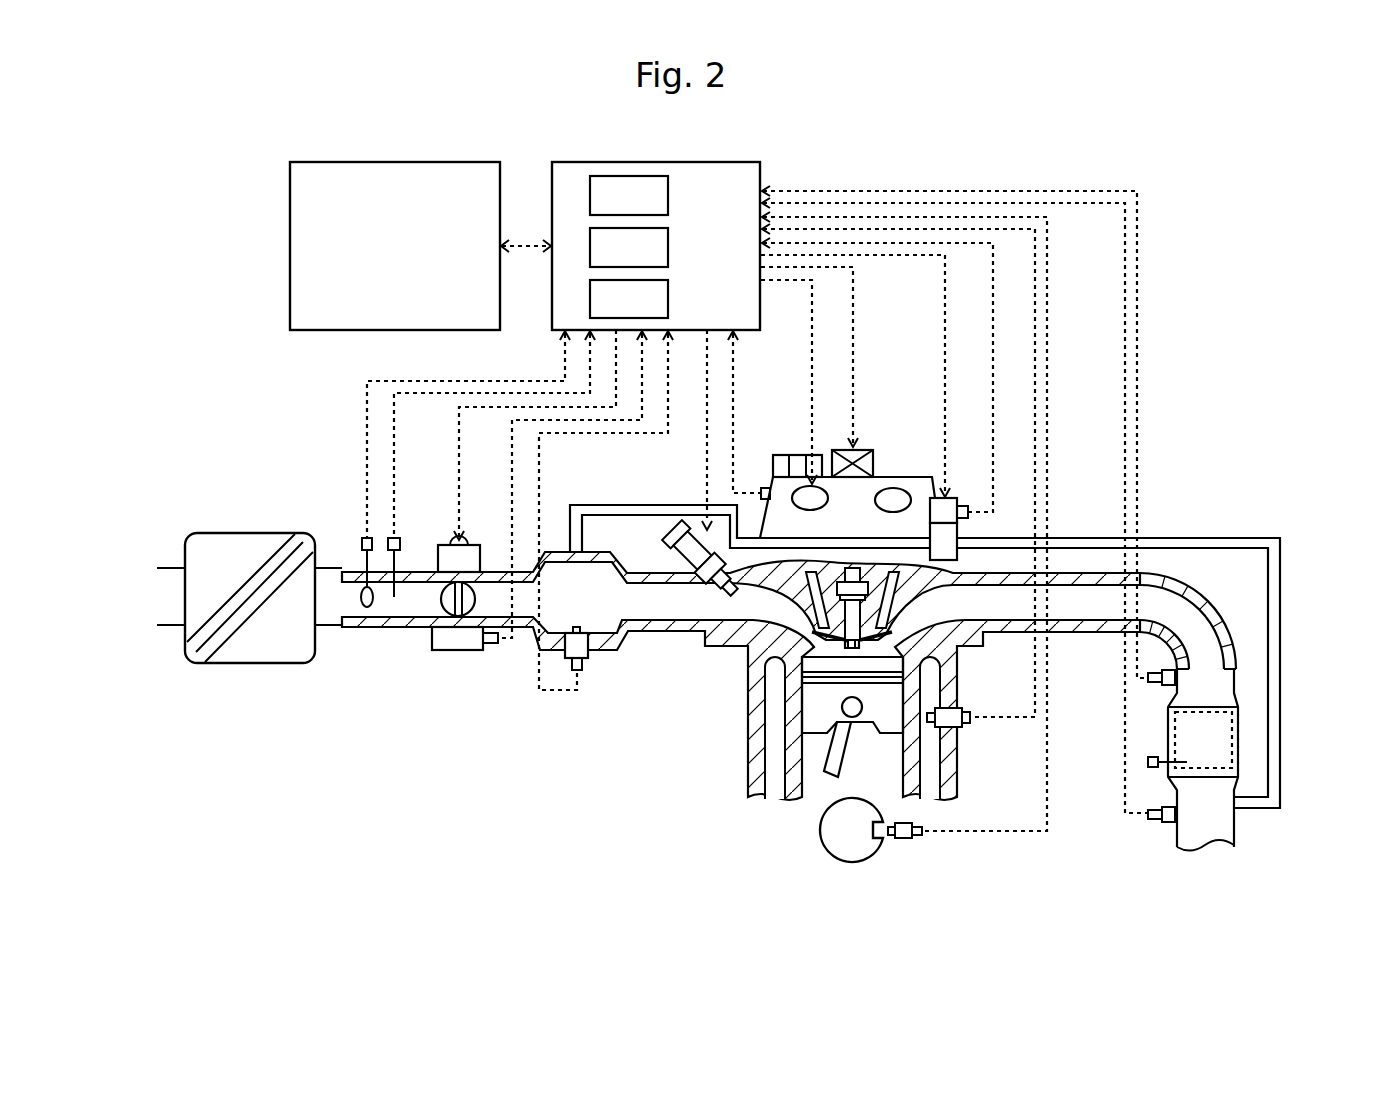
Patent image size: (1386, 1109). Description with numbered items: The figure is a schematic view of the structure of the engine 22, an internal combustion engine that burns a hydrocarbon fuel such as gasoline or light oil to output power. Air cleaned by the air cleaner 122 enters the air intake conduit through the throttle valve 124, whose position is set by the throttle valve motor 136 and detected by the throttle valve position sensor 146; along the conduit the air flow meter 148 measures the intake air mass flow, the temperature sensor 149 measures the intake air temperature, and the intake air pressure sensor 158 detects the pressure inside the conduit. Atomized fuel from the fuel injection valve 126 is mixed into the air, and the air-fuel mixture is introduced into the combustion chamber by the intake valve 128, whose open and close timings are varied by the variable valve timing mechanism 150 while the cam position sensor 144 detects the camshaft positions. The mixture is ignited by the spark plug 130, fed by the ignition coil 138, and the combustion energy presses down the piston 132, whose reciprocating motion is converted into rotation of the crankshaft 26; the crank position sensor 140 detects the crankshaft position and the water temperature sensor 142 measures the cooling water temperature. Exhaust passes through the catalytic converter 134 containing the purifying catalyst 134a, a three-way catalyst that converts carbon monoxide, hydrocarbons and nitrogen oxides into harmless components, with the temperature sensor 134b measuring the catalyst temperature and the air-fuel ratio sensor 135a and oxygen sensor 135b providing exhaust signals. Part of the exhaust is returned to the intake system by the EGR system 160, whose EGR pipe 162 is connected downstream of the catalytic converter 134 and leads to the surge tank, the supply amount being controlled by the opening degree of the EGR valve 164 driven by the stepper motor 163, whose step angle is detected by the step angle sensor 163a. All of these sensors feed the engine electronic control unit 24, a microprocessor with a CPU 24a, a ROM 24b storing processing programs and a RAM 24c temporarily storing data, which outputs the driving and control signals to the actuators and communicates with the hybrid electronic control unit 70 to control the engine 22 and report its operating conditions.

The hybrid electronic control unit 70 is at (393, 162).
The engine electronic control unit 24 is at (657, 162).
The CPU 24a is at (670, 196).
The ROM 24b is at (670, 248).
The RAM 24c is at (670, 299).
The engine 22 is at (871, 360).
The air cleaner 122 is at (247, 533).
The air flow meter 148 is at (360, 542).
The temperature sensor 149 is at (402, 542).
The throttle valve motor 136 is at (472, 543).
The throttle valve 124 is at (480, 612).
The throttle valve position sensor 146 is at (448, 652).
The intake air pressure sensor 158 is at (588, 660).
The fuel injection valve 126 is at (673, 531).
The intake valve 128 is at (821, 634).
The spark plug 130 is at (853, 622).
The piston 132 is at (820, 720).
The crankshaft 26 is at (820, 828).
The crank position sensor 140 is at (905, 838).
The water temperature sensor 142 is at (962, 710).
The cam position sensor 144 is at (766, 488).
The ignition coil 138 is at (866, 448).
The variable valve timing mechanism 150 is at (891, 477).
The stepper motor 163 is at (948, 497).
The step angle sensor 163a is at (963, 519).
The EGR valve 164 is at (958, 556).
The EGR system 160 is at (1212, 517).
The EGR pipe 162 is at (1282, 667).
The catalytic converter 134 is at (1168, 713).
The purifying catalyst 134a is at (1176, 737).
The temperature sensor 134b is at (1148, 762).
The air-fuel ratio sensor 135a is at (1172, 668).
The oxygen sensor 135b is at (1168, 823).